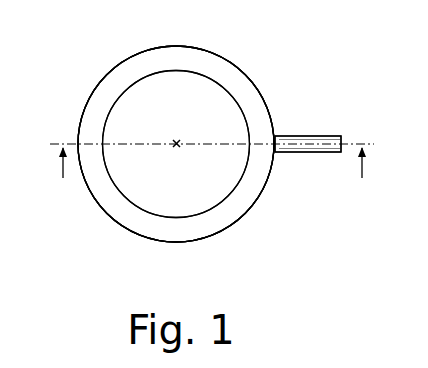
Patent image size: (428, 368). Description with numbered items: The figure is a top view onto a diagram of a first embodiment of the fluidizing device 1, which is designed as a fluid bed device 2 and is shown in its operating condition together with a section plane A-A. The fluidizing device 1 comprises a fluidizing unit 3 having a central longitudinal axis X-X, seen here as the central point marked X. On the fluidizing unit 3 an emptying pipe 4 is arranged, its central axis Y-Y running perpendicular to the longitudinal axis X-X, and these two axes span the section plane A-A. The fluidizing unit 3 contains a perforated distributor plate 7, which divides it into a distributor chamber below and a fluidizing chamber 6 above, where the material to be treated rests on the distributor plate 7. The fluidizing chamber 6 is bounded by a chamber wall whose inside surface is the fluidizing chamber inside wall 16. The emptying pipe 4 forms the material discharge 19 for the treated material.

The fluidizing device 1 is at (202, 157).
The fluid bed device 2 is at (243, 232).
The fluidizing unit 3 is at (113, 226).
The emptying pipe 4 is at (303, 155).
The fluidizing chamber 6 is at (261, 85).
The distributor plate 7 is at (190, 82).
The fluidizing chamber inside wall 16 is at (95, 113).
The material discharge 19 is at (316, 134).